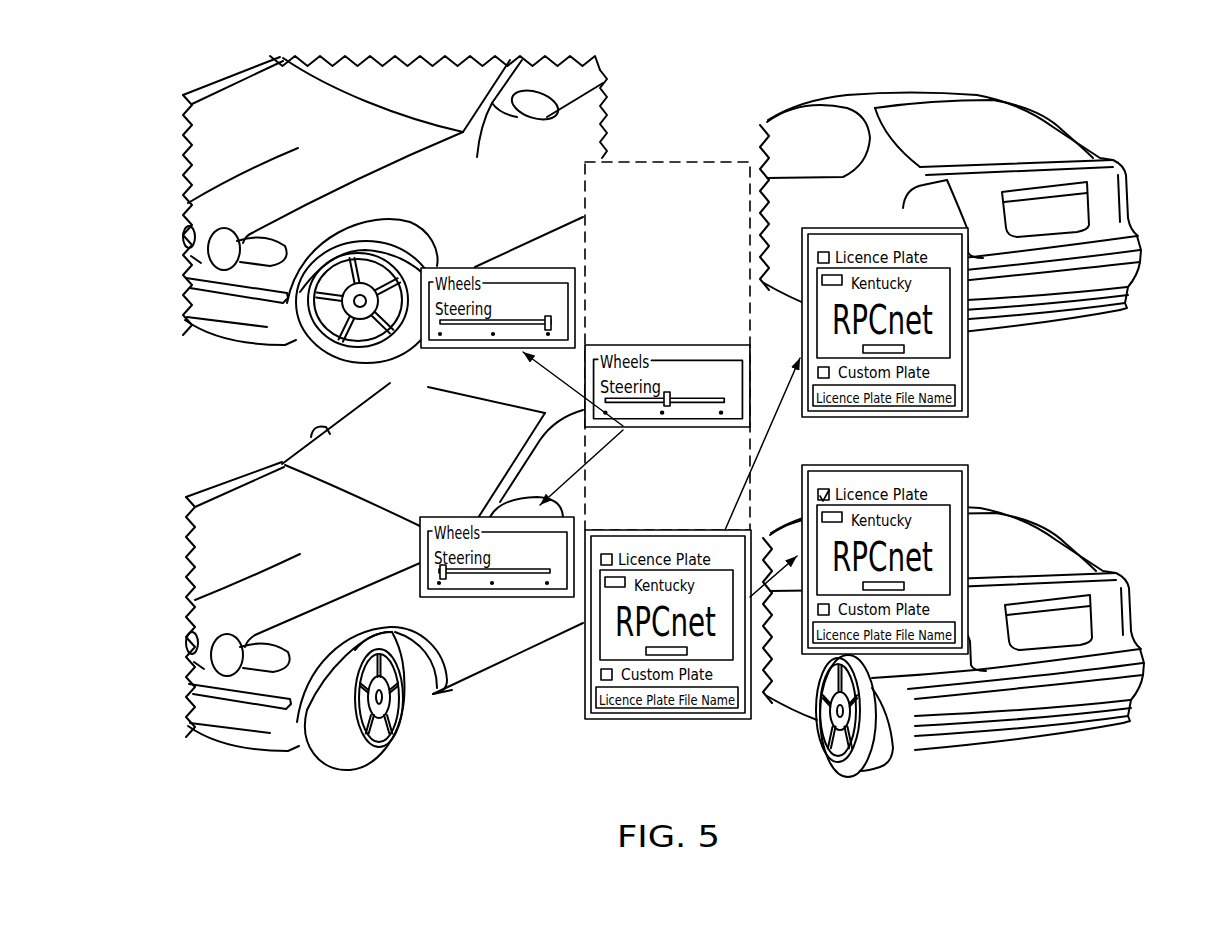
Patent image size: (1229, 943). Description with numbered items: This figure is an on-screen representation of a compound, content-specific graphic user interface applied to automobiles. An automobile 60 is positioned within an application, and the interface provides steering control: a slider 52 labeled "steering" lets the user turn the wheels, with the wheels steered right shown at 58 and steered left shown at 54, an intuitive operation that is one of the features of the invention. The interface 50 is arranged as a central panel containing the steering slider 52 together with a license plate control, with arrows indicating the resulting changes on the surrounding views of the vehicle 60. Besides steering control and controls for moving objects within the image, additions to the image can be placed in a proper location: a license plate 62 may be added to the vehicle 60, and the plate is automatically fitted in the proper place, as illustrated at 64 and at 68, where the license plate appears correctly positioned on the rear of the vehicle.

The vehicle customization interface 50 is at (678, 150).
The slider 52 is at (512, 580).
The wheels steered left 54 is at (378, 776).
The wheels steered right 58 is at (299, 364).
The automobile 60 is at (949, 775).
The license plate 62 is at (968, 480).
The properly fitted license plate 64 is at (1080, 210).
The proper place for license plate 68 is at (1067, 630).